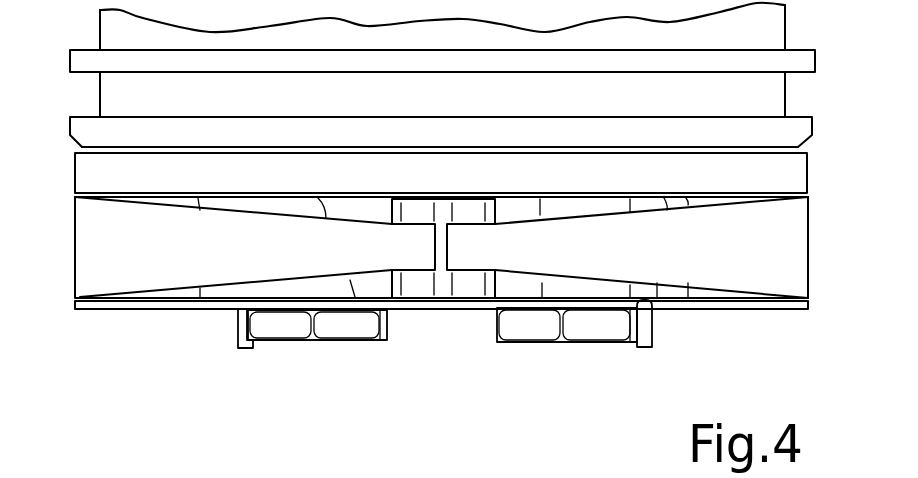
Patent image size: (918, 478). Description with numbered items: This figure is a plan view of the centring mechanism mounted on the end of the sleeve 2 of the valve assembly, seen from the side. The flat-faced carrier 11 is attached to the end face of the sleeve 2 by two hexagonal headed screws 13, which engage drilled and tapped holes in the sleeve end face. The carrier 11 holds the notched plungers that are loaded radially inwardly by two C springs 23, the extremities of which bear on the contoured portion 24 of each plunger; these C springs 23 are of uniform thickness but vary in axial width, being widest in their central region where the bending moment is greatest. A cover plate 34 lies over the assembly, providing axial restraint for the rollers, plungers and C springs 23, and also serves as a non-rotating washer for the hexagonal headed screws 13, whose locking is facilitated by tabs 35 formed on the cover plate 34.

The sleeve 2 is at (765, 96).
The carrier 11 is at (765, 170).
The C springs 23 is at (92, 268).
The contoured portion 24 is at (413, 280).
The cover plate 34 is at (138, 310).
The tabs 35 is at (240, 338).
The hexagonal headed screws 13 is at (283, 318).